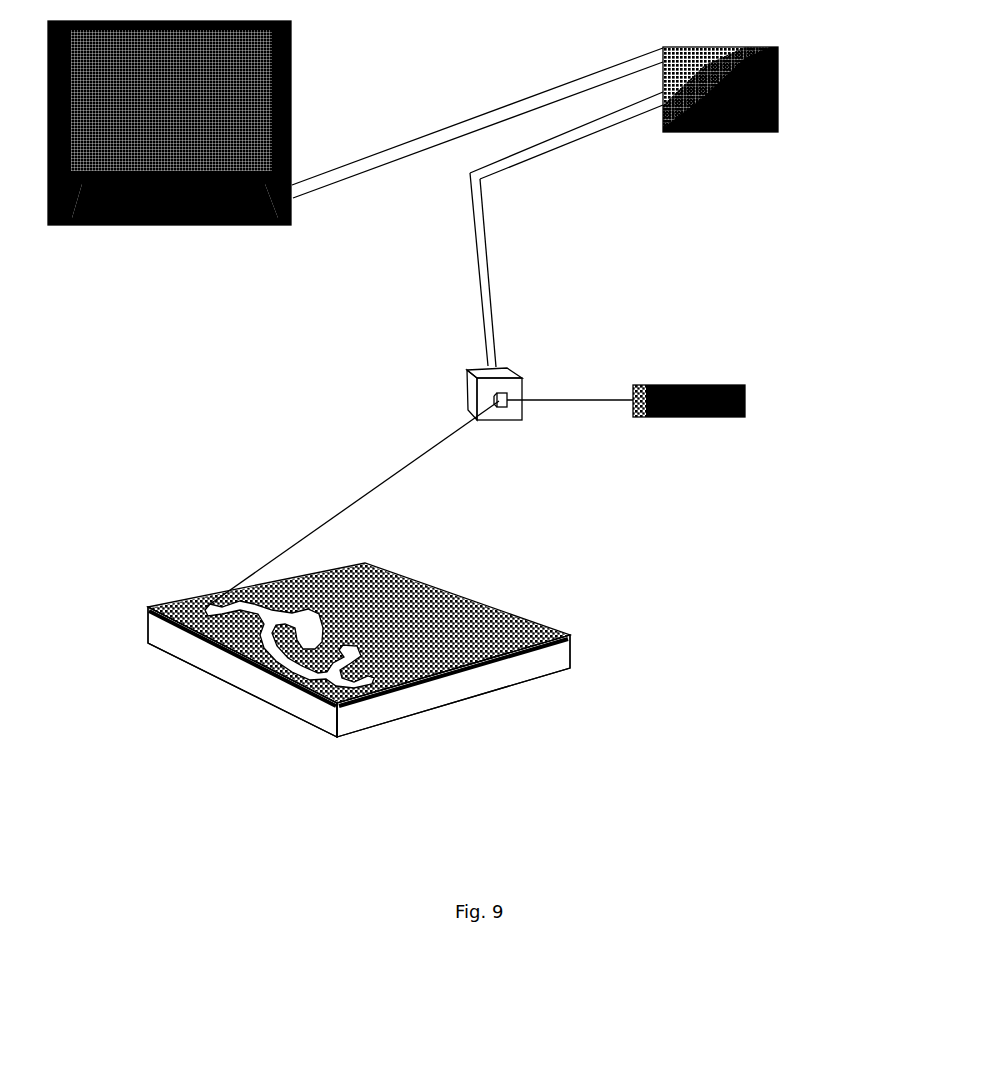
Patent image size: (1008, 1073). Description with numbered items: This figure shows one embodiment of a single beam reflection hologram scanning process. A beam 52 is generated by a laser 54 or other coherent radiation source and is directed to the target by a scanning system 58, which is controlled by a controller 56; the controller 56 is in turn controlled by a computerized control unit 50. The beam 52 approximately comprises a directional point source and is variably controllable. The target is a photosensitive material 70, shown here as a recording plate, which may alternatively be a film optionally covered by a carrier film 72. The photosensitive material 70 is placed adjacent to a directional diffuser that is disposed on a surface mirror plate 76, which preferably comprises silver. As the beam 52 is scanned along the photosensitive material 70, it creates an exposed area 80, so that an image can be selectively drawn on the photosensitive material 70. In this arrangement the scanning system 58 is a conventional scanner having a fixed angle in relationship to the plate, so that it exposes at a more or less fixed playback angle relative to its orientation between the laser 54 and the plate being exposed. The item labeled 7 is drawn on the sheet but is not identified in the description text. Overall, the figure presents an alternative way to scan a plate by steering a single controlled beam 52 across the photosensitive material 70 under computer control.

The sample block 7 is at (584, 648).
The computerized control unit 50 is at (302, 98).
The beam 52 is at (422, 481).
The laser 54 is at (704, 372).
The controller 56 is at (797, 96).
The scanning system 58 is at (450, 360).
The photosensitive material 70 is at (172, 637).
The carrier film 72 is at (177, 605).
The surface mirror plate 76 is at (324, 707).
The exposed area 80 is at (331, 616).